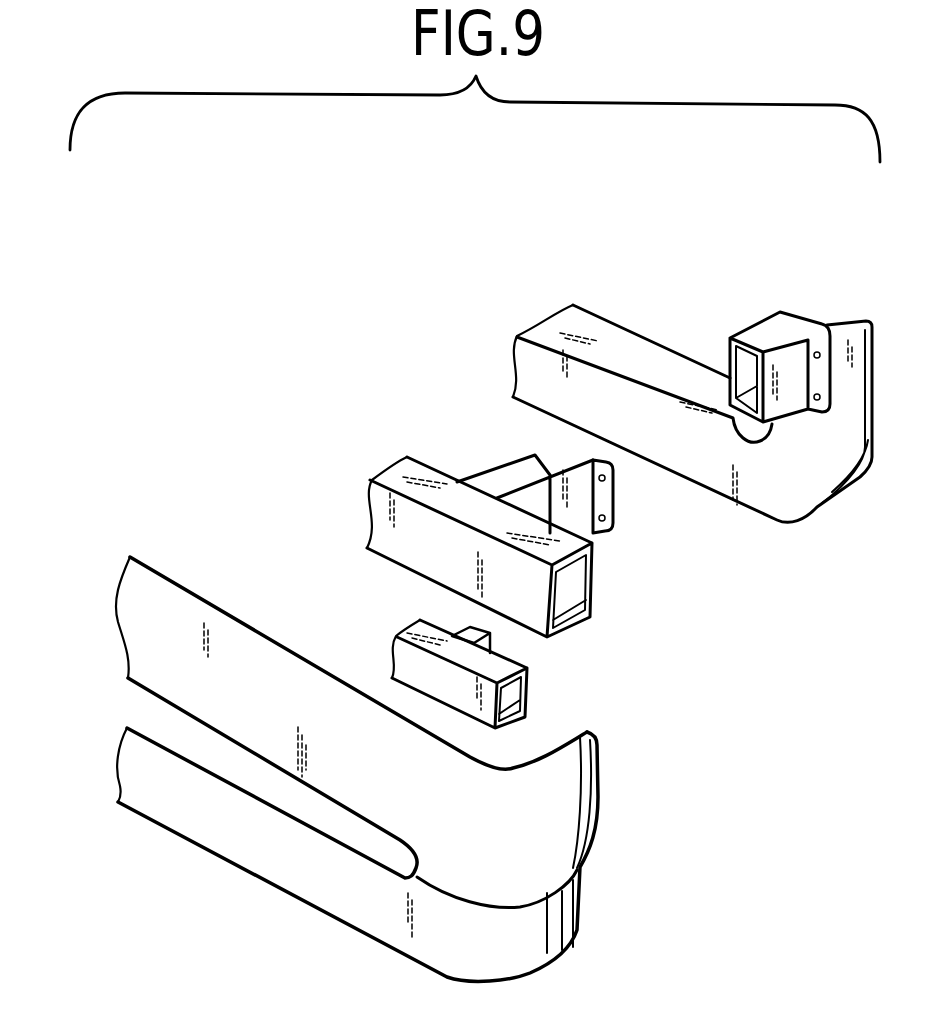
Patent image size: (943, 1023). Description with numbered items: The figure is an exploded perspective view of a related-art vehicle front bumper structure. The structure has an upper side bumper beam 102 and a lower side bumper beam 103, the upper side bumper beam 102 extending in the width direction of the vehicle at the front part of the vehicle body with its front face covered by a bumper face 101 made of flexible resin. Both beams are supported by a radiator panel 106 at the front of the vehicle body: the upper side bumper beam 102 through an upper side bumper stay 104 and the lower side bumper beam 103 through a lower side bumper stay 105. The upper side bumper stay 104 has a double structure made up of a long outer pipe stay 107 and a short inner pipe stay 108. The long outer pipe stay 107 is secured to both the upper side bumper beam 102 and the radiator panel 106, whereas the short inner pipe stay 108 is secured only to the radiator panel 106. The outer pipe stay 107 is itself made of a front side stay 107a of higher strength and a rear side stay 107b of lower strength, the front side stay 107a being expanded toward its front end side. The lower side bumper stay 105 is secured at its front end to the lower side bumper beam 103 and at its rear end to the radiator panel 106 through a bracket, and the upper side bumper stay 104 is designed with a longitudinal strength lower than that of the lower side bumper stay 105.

The bumper face 101 is at (193, 822).
The upper side bumper beam 102 is at (372, 530).
The lower side bumper beam 103 is at (397, 655).
The upper side bumper stay 104 is at (803, 230).
The lower side bumper stay 105 is at (495, 640).
The radiator panel 106 is at (807, 472).
The long outer pipe stay 107 is at (503, 280).
The front side stay 107a is at (480, 480).
The rear side stay 107b is at (542, 460).
The short inner pipe stay 108 is at (757, 338).